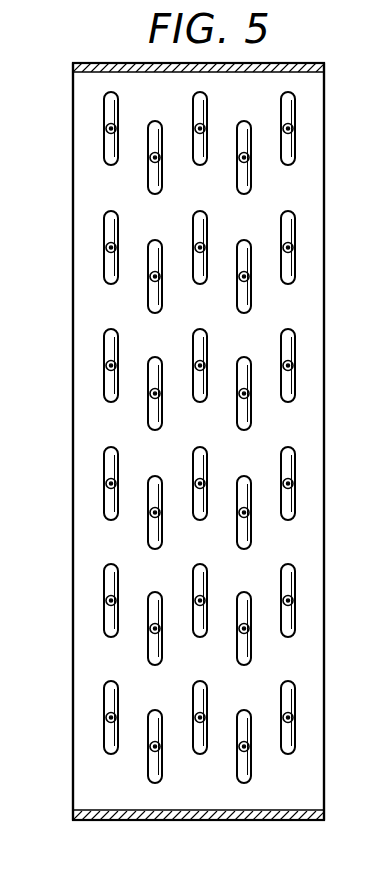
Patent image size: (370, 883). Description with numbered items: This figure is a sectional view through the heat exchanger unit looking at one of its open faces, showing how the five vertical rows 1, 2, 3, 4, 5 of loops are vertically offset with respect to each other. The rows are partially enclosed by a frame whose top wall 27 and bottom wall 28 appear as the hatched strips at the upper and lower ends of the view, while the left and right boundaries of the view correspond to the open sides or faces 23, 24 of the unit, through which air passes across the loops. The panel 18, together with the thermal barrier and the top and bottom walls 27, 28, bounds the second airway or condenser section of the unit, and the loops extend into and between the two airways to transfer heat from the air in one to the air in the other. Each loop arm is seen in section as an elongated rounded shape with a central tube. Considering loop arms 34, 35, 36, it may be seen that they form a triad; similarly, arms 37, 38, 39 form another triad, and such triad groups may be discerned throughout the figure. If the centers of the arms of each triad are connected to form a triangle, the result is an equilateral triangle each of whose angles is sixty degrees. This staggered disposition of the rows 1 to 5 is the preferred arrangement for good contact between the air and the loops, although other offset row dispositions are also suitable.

The first vertical row 1 is at (123, 91).
The second vertical row 2 is at (157, 121).
The third vertical row 3 is at (211, 91).
The fourth vertical row 4 is at (246, 121).
The fifth vertical row 5 is at (302, 93).
The end panel 18 is at (313, 461).
The open side or face 23 is at (73, 458).
The open side or face 24 is at (325, 402).
The top wall 27 is at (93, 63).
The bottom wall 28 is at (135, 821).
The loop arm 34 is at (76, 717).
The loop arm 35 is at (160, 702).
The loop arm 36 is at (174, 742).
The loop arm 37 is at (104, 628).
The loop arm 38 is at (150, 660).
The loop arm 39 is at (105, 688).